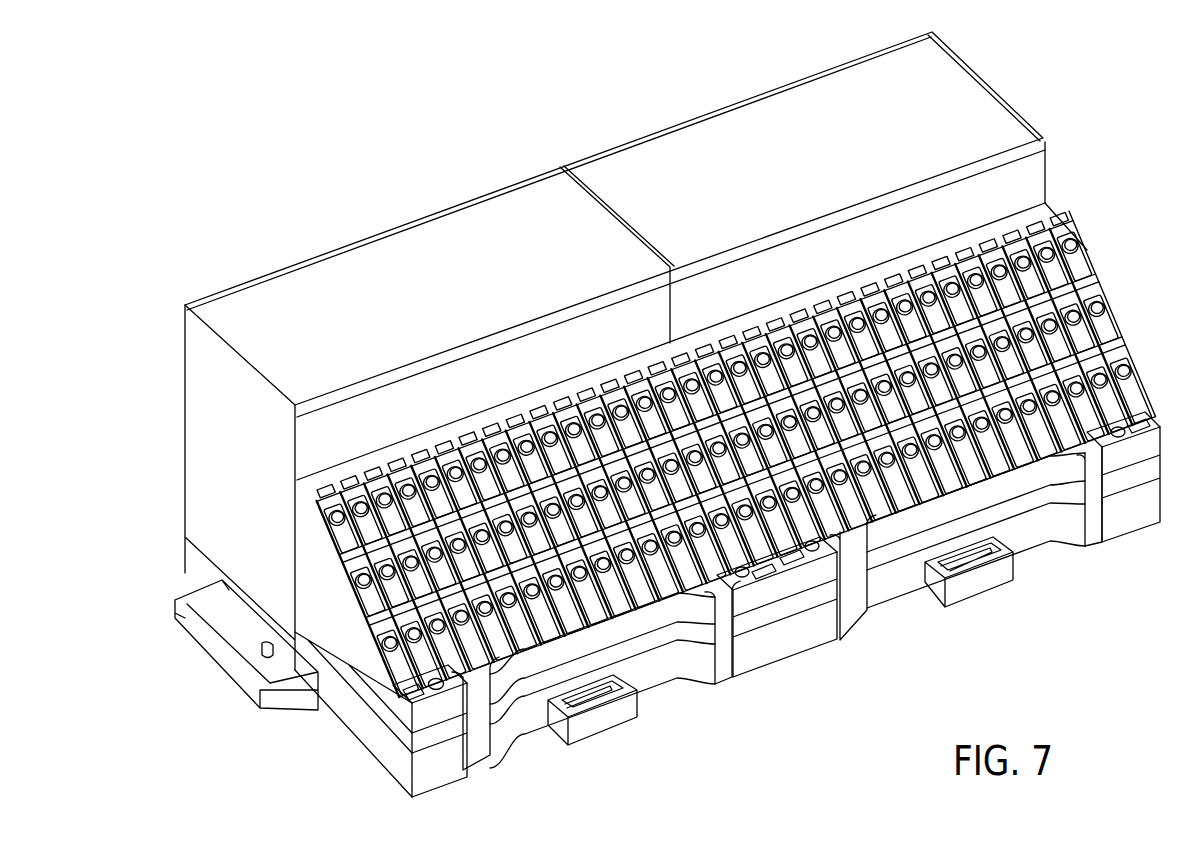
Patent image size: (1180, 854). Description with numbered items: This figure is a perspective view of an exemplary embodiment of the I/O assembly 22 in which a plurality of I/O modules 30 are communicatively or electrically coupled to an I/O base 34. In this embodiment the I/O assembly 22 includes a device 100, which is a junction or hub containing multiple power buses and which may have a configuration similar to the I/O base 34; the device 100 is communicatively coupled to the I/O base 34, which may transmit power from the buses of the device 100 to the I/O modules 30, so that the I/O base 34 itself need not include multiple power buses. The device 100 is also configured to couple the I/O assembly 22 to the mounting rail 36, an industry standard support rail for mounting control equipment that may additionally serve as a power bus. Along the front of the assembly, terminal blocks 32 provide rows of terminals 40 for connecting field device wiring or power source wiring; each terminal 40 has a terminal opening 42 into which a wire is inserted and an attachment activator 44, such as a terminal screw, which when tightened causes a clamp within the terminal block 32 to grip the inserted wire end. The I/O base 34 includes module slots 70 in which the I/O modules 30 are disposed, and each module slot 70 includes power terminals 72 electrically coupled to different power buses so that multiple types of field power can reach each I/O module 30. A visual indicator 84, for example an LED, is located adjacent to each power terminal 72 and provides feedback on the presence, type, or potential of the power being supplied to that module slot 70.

The I/O assembly 22 is at (324, 90).
The I/O module 30 is at (613, 160).
The terminal 40 is at (316, 581).
The attachment activator 44 is at (719, 418).
The terminal opening 42 is at (358, 580).
The mounting rail 36 is at (238, 666).
The terminal block 32 is at (376, 682).
The device 100 is at (397, 768).
The I/O base 34 is at (438, 708).
The power terminal 72 is at (423, 738).
The visual indicator 84 is at (454, 674).
The module slot 70 is at (659, 704).